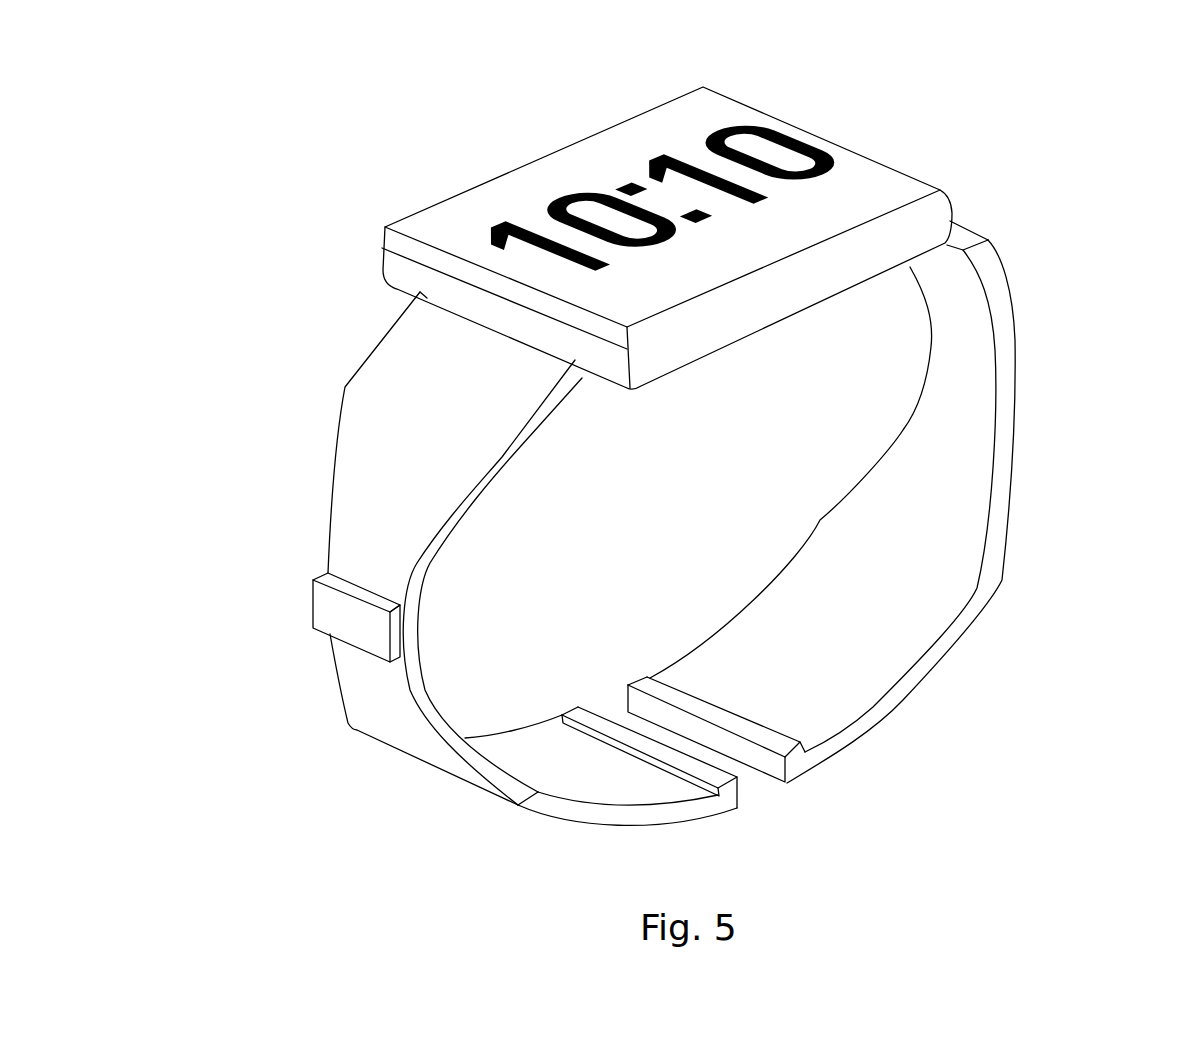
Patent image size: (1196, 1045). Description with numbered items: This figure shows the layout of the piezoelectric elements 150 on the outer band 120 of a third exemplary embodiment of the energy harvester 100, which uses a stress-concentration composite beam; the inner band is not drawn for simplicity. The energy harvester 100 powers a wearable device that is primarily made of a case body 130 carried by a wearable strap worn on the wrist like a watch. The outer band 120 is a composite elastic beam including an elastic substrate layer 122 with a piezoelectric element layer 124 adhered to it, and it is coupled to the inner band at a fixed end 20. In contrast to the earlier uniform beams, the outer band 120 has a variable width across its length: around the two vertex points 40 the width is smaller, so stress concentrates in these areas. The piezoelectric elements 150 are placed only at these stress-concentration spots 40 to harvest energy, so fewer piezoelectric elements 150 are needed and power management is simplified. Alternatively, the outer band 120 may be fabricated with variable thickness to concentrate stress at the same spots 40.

The energy harvester 100 is at (943, 102).
The case body 130 is at (558, 180).
The outer band 120 is at (410, 357).
The vertex points 40 is at (1018, 343).
The piezoelectric elements 150 is at (313, 607).
The piezoelectric element layer 124 is at (342, 620).
The elastic substrate layer 122 is at (358, 658).
The fixed end 20 is at (752, 793).